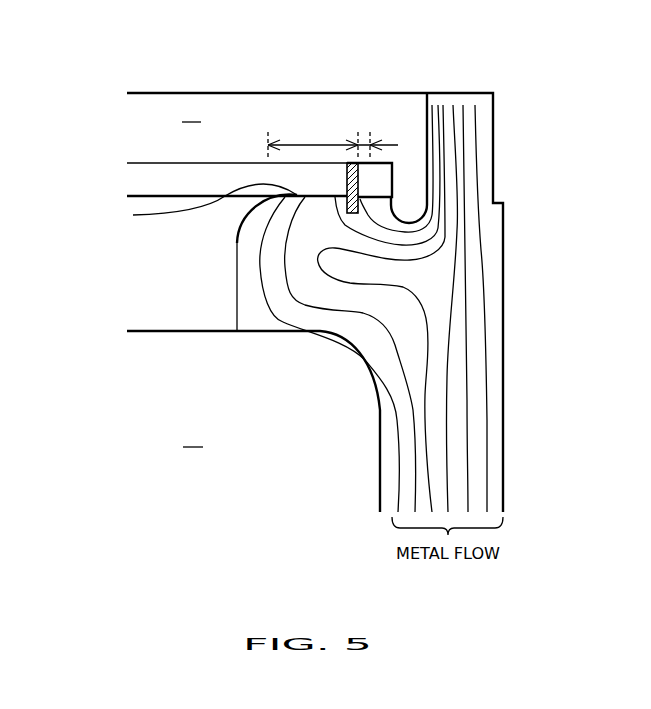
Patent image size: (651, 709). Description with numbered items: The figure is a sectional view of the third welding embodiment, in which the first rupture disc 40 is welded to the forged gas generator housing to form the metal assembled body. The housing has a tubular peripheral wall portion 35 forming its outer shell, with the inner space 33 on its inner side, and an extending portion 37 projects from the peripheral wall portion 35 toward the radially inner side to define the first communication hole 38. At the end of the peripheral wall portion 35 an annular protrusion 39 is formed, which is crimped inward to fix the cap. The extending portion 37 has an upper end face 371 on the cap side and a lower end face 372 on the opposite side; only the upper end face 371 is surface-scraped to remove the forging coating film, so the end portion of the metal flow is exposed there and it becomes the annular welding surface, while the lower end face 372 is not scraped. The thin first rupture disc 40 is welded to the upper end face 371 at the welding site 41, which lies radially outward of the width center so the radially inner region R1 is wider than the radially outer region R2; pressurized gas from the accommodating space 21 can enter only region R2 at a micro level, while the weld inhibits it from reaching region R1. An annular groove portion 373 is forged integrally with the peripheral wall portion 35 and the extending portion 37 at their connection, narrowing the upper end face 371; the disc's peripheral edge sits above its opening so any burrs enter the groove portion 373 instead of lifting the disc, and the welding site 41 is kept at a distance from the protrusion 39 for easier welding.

The accommodating space 21 is at (192, 113).
The inner space 33 is at (193, 437).
The peripheral wall portion 35 is at (495, 428).
The extending portion 37 is at (248, 257).
The first communication hole 38 is at (173, 307).
The protrusion 39 is at (485, 160).
The first rupture disc 40 is at (148, 172).
The welding site 41 is at (347, 170).
The upper end face 371 is at (198, 203).
The lower end face 372 is at (253, 333).
The groove portion 373 is at (420, 213).
The region R1 is at (303, 145).
The region R2 is at (362, 145).